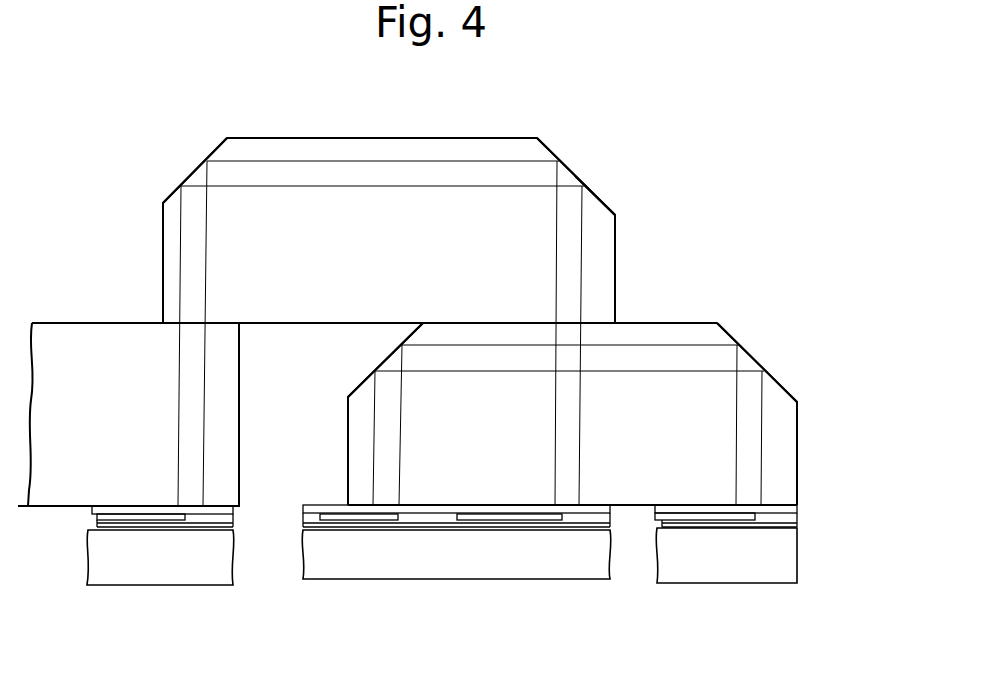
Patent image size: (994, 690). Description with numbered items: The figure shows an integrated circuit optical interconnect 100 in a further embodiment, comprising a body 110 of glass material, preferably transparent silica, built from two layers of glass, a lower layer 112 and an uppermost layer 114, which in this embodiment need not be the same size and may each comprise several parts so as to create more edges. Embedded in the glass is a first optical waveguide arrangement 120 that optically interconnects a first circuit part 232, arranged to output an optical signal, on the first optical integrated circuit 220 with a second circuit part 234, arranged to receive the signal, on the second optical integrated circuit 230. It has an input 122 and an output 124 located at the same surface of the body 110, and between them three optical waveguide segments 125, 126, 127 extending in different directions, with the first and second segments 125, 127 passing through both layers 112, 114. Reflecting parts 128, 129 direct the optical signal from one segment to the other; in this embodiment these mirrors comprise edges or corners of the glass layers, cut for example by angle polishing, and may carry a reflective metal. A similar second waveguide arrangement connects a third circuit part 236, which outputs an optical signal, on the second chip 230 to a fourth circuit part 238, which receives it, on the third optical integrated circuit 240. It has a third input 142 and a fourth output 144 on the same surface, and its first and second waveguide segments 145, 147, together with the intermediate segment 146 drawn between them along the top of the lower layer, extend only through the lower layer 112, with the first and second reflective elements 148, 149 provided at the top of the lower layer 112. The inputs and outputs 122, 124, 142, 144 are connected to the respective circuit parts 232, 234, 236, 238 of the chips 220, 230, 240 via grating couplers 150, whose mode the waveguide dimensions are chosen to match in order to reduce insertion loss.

The integrated circuit optical interconnect 100 is at (732, 228).
The body 110 is at (617, 252).
The lower layer of glass material 112 is at (788, 394).
The uppermost layer of glass material 114 is at (603, 204).
The first optical waveguide arrangement 120 is at (161, 238).
The input 122 is at (187, 502).
The output 124 is at (565, 497).
The first optical waveguide segment 125 is at (185, 408).
The optical waveguide segment 126 is at (452, 160).
The second optical waveguide segment 127 is at (565, 227).
The reflecting part 128 is at (197, 168).
The reflecting part 129 is at (568, 168).
The third input 142 is at (385, 497).
The fourth output 144 is at (748, 498).
The first optical waveguide segment 145 is at (383, 428).
The top surface 146 is at (663, 357).
The second optical waveguide segment 147 is at (752, 441).
The first reflective element 148 is at (388, 356).
The second reflective element 149 is at (750, 352).
The grating coupler 150 is at (167, 520).
The first optical integrated circuit 220 is at (95, 586).
The second optical integrated circuit 230 is at (437, 580).
The first circuit part 232 is at (142, 530).
The second circuit part 234 is at (548, 527).
The third circuit part 236 is at (365, 527).
The fourth circuit part 238 is at (745, 528).
The third optical integrated circuit 240 is at (755, 583).